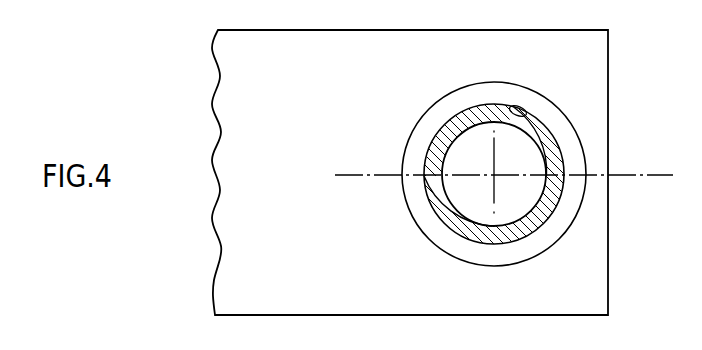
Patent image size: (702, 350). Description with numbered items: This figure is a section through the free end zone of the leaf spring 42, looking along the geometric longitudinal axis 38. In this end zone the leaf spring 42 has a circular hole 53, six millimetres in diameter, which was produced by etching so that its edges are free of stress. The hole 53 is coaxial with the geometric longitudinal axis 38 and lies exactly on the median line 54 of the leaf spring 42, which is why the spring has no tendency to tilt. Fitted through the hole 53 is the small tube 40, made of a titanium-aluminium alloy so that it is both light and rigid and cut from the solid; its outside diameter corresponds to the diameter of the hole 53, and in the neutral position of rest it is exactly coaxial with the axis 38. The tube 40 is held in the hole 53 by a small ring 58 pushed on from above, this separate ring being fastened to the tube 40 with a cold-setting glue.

The geometric longitudinal axis 38 is at (494, 178).
The small tube 40 is at (447, 123).
The leaf spring 42 is at (306, 186).
The circular hole 53 is at (524, 114).
The median line 54 is at (652, 175).
The small ring 58 is at (430, 219).